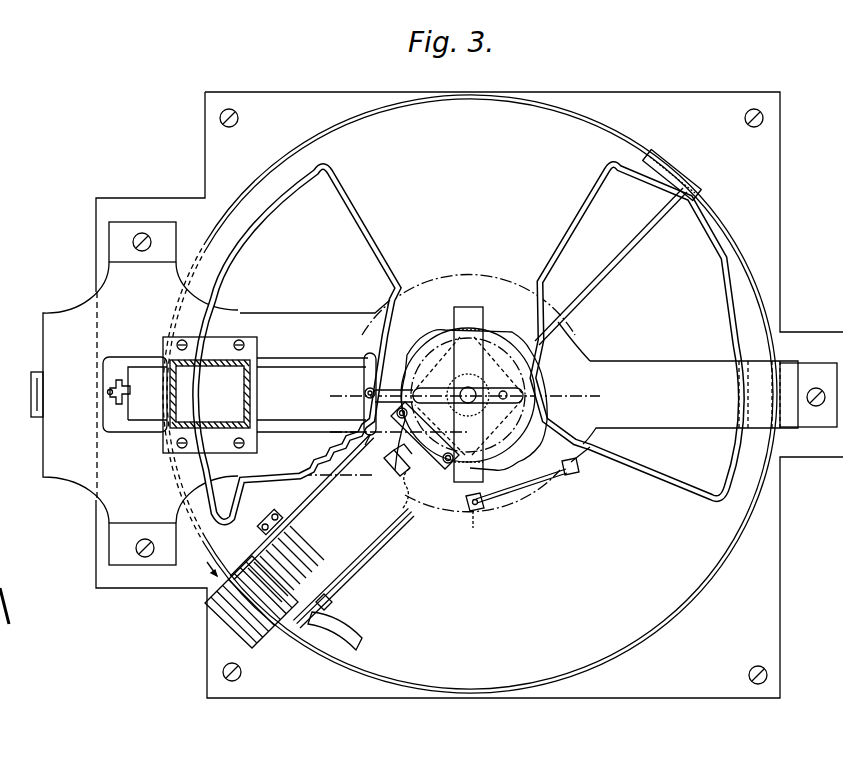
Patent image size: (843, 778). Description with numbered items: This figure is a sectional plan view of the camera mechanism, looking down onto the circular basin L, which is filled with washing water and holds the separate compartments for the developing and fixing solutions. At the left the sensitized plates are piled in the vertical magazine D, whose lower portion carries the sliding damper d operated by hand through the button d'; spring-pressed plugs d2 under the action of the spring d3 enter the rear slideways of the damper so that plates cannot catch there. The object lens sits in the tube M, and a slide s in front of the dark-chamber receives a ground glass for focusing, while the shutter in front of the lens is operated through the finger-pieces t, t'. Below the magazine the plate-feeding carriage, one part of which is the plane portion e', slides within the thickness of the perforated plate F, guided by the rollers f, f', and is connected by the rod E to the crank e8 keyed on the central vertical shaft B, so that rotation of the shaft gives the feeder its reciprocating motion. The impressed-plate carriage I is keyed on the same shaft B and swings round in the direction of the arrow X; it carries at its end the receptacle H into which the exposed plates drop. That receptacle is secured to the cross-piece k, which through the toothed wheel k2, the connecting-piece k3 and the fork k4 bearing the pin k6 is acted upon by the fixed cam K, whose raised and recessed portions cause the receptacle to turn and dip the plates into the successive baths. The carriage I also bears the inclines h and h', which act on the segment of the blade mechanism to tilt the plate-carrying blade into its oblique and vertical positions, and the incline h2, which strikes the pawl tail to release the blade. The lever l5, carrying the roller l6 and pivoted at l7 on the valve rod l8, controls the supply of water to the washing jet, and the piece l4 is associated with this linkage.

The circular basin L is at (470, 394).
The finger-piece or key t is at (297, 345).
The finger-piece or key t' is at (637, 331).
The incline h' is at (618, 245).
The plate F is at (519, 372).
The vertical channel or shaft D is at (210, 395).
The sliding damper or shutter d is at (135, 394).
The button or knob d' is at (103, 394).
The slide s is at (115, 383).
The tube M is at (27, 394).
The plugs d2 is at (14, 605).
The spring d3 is at (12, 552).
The carriage part e' is at (312, 395).
The rod E is at (394, 389).
The roller f' is at (362, 390).
The roller f is at (357, 430).
The shaft B is at (468, 406).
The crank e8 is at (460, 393).
The fixed cam K is at (471, 394).
The stud or pin k6 is at (428, 447).
The fork k4 is at (417, 488).
The block l4 is at (397, 462).
The carriage I is at (320, 528).
The receptacle H is at (251, 602).
The cross-piece k is at (292, 648).
The toothed wheel k2 is at (317, 593).
The connecting-piece k3 is at (357, 572).
The incline h2 is at (266, 522).
The incline h is at (335, 631).
The arrow X is at (206, 566).
The pivot l7 is at (576, 474).
The lever l5 is at (521, 490).
The roller l6 is at (465, 509).
The rod l8 is at (473, 526).